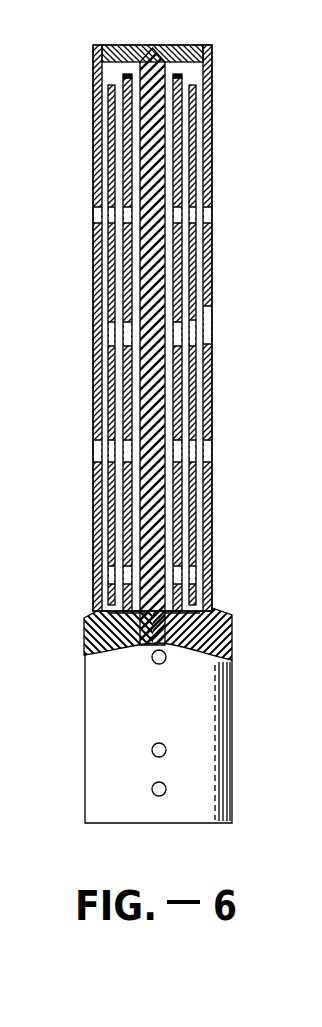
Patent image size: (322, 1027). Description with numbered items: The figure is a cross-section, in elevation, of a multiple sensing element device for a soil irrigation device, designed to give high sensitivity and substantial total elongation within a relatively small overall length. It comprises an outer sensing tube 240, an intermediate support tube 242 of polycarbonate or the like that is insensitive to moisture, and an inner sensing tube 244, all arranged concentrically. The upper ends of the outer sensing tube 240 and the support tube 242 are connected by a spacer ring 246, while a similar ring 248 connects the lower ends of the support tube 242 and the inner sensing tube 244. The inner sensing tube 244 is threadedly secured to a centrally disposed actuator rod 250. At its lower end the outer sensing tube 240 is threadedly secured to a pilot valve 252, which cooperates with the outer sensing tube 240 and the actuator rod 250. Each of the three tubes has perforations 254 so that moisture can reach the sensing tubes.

The outer sensing tube 240 is at (212, 144).
The intermediate support tube 242 is at (200, 262).
The inner sensing tube 244 is at (196, 397).
The spacer ring 246 is at (213, 68).
The ring 248 is at (201, 592).
The actuator rod 250 is at (158, 405).
The pilot valve 252 is at (222, 685).
The perforations 254 is at (180, 103).